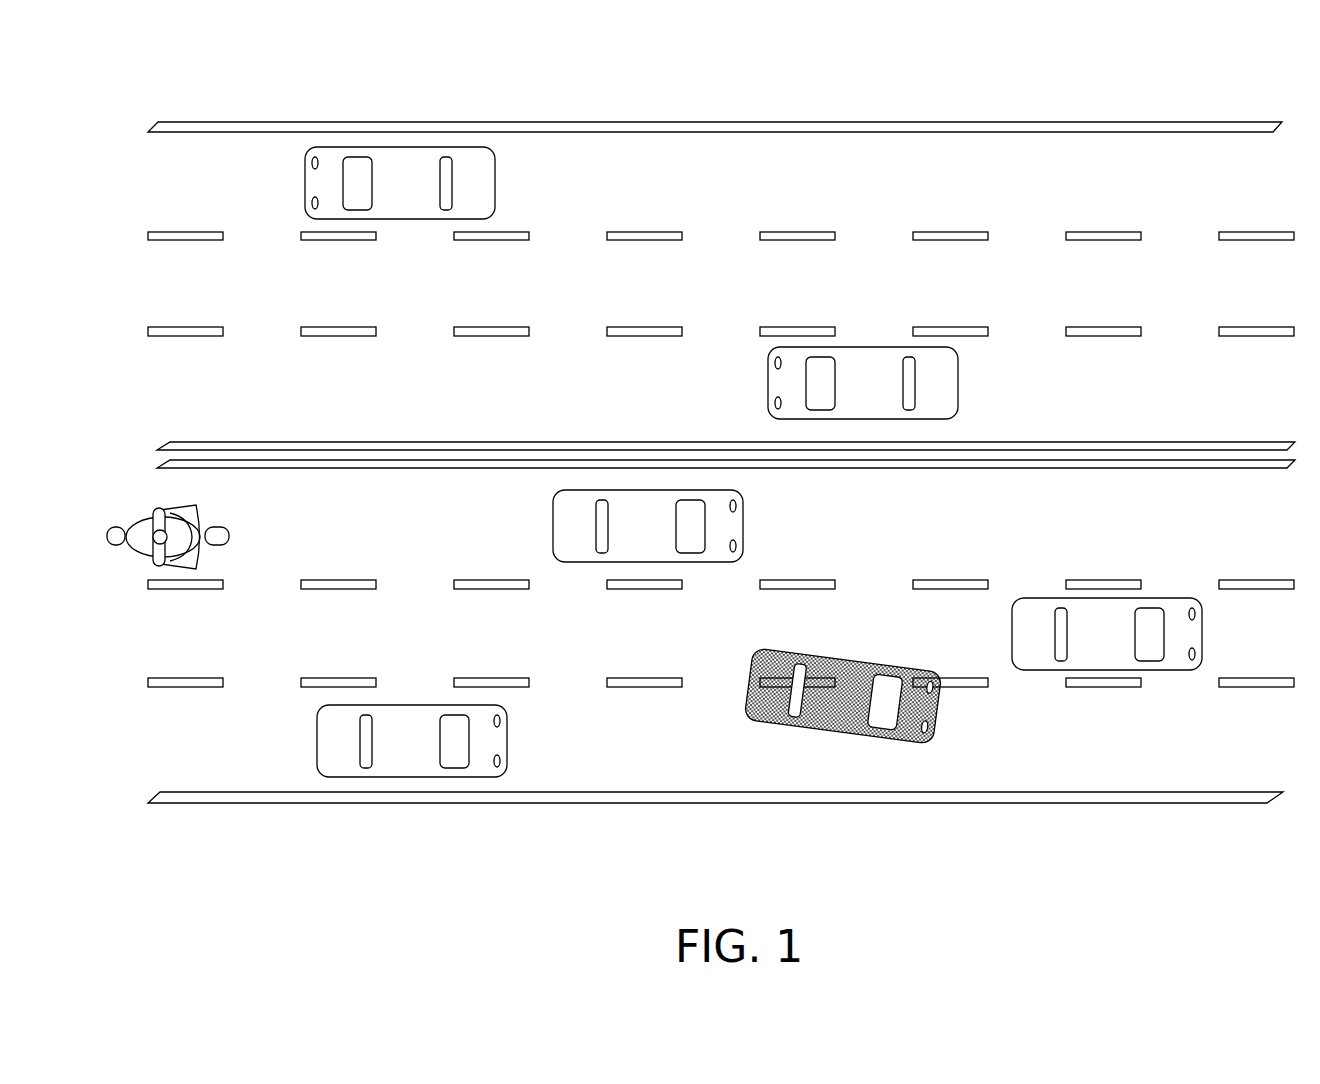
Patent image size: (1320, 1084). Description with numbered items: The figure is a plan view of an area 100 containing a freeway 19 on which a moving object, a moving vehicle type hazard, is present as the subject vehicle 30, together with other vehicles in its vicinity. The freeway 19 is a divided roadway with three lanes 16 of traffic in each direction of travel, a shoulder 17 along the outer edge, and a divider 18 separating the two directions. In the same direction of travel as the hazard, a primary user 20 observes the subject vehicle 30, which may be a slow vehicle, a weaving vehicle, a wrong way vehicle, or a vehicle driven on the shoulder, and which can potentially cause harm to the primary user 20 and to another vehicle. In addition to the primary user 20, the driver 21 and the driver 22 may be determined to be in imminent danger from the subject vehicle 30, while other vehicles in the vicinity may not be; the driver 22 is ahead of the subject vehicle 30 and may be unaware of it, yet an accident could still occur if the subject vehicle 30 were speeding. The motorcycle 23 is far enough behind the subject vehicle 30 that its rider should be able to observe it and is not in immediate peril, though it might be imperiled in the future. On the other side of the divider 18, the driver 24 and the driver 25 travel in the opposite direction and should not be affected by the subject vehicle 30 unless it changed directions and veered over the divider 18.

The area 100 is at (1130, 97).
The lanes 16 is at (966, 688).
The shoulder 17 is at (1012, 803).
The divider 18 is at (1095, 469).
The freeway 19 is at (995, 523).
The primary user 20 is at (508, 744).
The driver 21 is at (742, 525).
The driver 22 is at (1162, 597).
The motorcycle 23 is at (215, 523).
The driver 24 is at (958, 380).
The driver 25 is at (495, 188).
The subject vehicle 30 is at (862, 736).